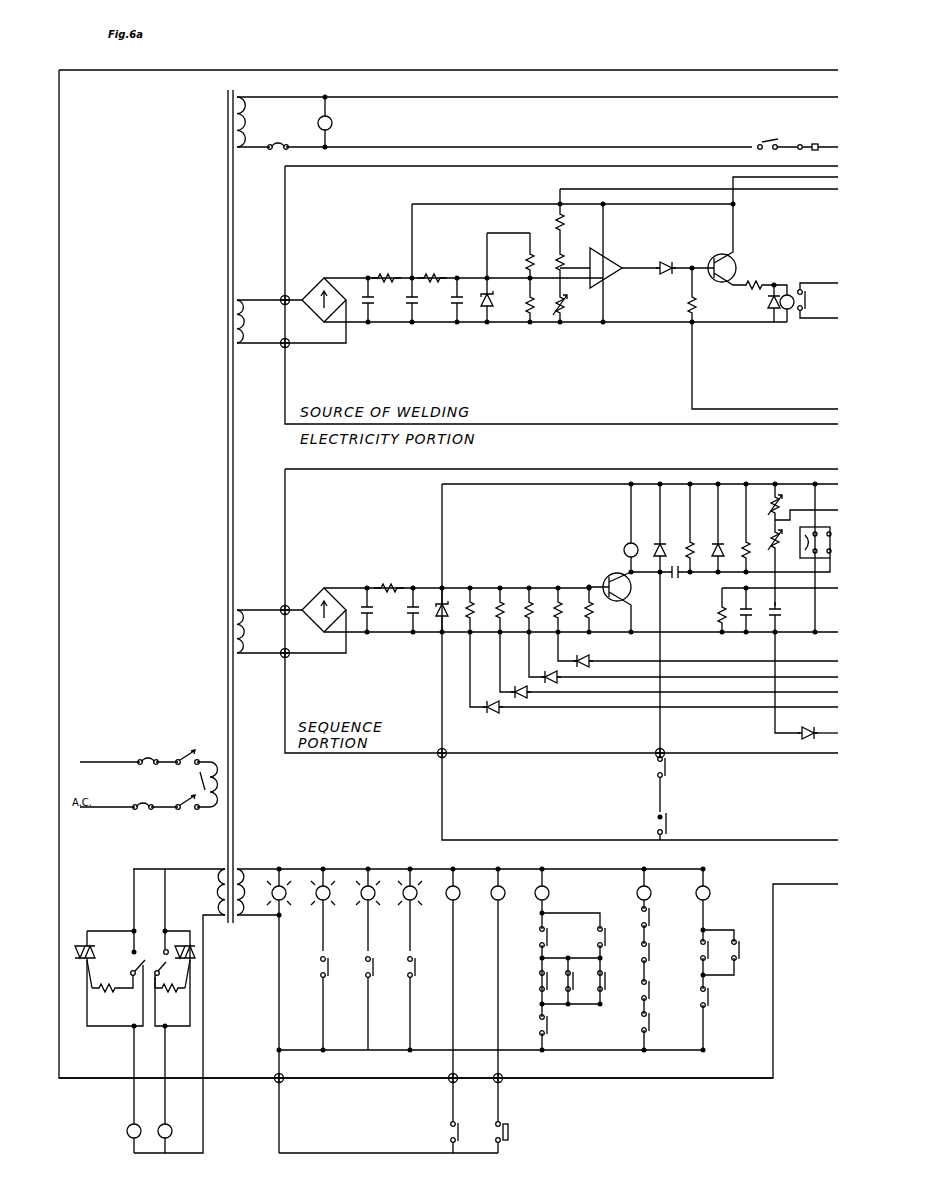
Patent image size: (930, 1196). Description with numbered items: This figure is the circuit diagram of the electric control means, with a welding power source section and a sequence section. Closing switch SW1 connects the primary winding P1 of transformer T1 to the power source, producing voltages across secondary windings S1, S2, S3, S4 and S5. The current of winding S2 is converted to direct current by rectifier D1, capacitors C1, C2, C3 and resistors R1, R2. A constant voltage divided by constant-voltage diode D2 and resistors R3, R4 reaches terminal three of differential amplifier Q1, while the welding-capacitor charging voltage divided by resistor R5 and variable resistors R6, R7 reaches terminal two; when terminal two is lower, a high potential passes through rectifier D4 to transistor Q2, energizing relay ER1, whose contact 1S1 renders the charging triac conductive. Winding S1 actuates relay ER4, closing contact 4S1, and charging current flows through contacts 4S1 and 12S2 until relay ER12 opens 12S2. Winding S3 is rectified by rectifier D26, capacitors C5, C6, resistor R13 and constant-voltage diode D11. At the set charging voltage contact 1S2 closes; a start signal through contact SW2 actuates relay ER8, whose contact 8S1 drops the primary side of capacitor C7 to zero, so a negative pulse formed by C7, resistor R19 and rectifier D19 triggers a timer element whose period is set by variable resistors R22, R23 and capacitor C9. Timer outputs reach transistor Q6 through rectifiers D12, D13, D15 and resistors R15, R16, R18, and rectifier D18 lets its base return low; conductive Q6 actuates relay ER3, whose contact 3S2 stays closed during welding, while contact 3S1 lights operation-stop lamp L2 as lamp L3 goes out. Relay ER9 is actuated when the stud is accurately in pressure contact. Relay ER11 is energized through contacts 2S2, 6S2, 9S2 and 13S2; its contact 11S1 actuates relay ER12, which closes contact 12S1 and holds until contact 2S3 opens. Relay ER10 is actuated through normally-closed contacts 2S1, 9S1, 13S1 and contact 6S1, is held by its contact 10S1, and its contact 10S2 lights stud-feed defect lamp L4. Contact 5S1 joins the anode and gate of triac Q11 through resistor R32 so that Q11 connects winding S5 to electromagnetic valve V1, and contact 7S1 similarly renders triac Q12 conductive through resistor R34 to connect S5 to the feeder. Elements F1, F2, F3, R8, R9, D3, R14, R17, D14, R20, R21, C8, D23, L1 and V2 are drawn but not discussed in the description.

The secondary winding S1 is at (245, 122).
The fuse F3 is at (279, 153).
The relay ER4 is at (336, 122).
The relay contact 4S1 is at (765, 137).
The relay contact 12S2 is at (804, 137).
The secondary winding S2 is at (245, 321).
The rectifier D1 is at (324, 309).
The capacitor C1 is at (373, 300).
The resistor R1 is at (386, 284).
The capacitor C2 is at (417, 264).
The resistor R2 is at (432, 284).
The capacitor C3 is at (462, 300).
The constant-voltage diode D2 is at (505, 279).
The resistor R3 is at (537, 257).
The resistor R4 is at (537, 301).
The resistor R5 is at (567, 218).
The variable resistor R6 is at (573, 268).
The variable resistor R7 is at (566, 307).
The differential amplifier Q1 is at (625, 264).
The rectifier D4 is at (684, 274).
The resistor R8 is at (763, 338).
The transistor Q2 is at (773, 236).
The resistor R9 is at (763, 291).
The diode D3 is at (768, 303).
The relay ER1 is at (788, 294).
The relay contact 1S1 is at (818, 300).
The secondary winding S3 is at (245, 631).
The rectifier D26 is at (324, 619).
The capacitor C5 is at (372, 610).
The resistor R13 is at (389, 582).
The capacitor C6 is at (418, 610).
The constant-voltage diode D11 is at (451, 610).
The resistor R18 is at (480, 647).
The resistor R17 is at (510, 639).
The resistor R16 is at (539, 632).
The resistor R15 is at (568, 624).
The resistor R14 is at (598, 610).
The rectifier D15 is at (660, 711).
The diode D14 is at (674, 695).
The rectifier D13 is at (689, 681).
The rectifier D12 is at (705, 665).
The transistor Q6 is at (618, 603).
The relay ER3 is at (638, 528).
The capacitor C7 is at (671, 580).
The rectifier D18 is at (668, 617).
The resistor R19 is at (699, 528).
The rectifier D19 is at (726, 528).
The resistor R20 is at (755, 528).
The variable resistor R23 is at (766, 563).
The variable resistor R22 is at (786, 501).
The resistor R21 is at (731, 611).
The capacitor C8 is at (751, 611).
The capacitor C9 is at (784, 667).
The diode D23 is at (818, 738).
The relay contact 1S2 is at (672, 782).
The relay contact 8S1 is at (673, 826).
The fuse F1 is at (149, 769).
The fuse F2 is at (145, 814).
The switch SW1 is at (188, 787).
The primary winding P1 is at (201, 784).
The secondary winding S5 is at (214, 892).
The secondary winding S4 is at (250, 892).
The transformer T1 is at (242, 933).
The indicator lamp L1 is at (282, 1010).
The operation stop pilot lamp L2 is at (326, 960).
The relay contact 3S1 is at (334, 972).
The pilot lamp L3 is at (371, 959).
The relay contact 3S2 is at (379, 972).
The stud-feed defect pilot lamp L4 is at (413, 960).
The relay contact 10S2 is at (425, 972).
The relay ER8 is at (462, 1010).
The relay ER9 is at (507, 1010).
The start contact SW2 is at (492, 1132).
The relay ER10 is at (555, 890).
The relay contact 6S1 is at (554, 937).
The relay contact 10S1 is at (615, 937).
The normally-closed relay contact 2S1 is at (552, 982).
The normally-closed relay contact 9S1 is at (578, 982).
The normally-closed relay contact 13S1 is at (615, 981).
The relay ER11 is at (657, 960).
The relay contact 2S2 is at (656, 917).
The relay contact 6S2 is at (656, 952).
The relay contact 9S2 is at (656, 990).
The relay contact 13S2 is at (659, 1022).
The relay ER12 is at (716, 960).
The relay contact 11S1 is at (716, 957).
The relay contact 12S1 is at (748, 957).
The relay contact 2S3 is at (715, 1001).
The triac Q11 is at (109, 978).
The relay contact 5S1 is at (127, 963).
The resistor R32 is at (110, 983).
The electromagnetic valve V1 is at (140, 1136).
The relay contact 7S1 is at (153, 911).
The triac Q12 is at (175, 978).
The resistor R34 is at (172, 983).
The voltmeter V2 is at (171, 1136).